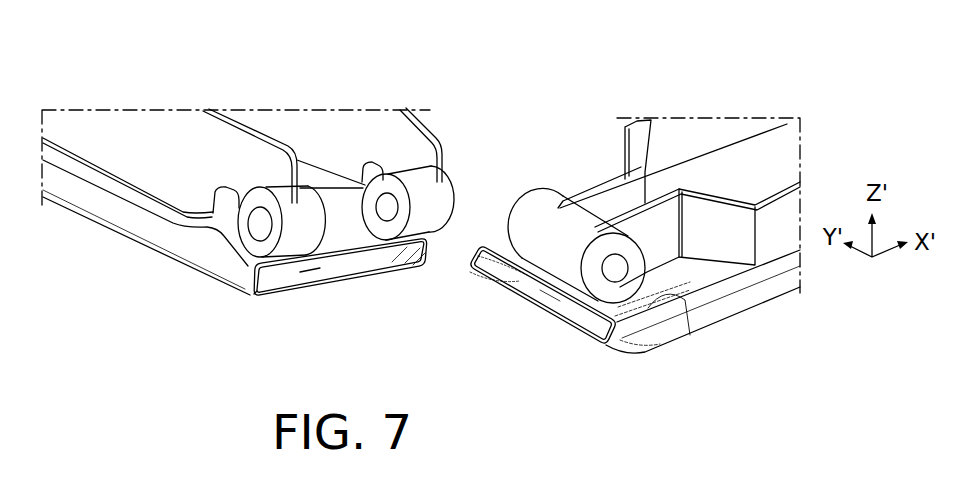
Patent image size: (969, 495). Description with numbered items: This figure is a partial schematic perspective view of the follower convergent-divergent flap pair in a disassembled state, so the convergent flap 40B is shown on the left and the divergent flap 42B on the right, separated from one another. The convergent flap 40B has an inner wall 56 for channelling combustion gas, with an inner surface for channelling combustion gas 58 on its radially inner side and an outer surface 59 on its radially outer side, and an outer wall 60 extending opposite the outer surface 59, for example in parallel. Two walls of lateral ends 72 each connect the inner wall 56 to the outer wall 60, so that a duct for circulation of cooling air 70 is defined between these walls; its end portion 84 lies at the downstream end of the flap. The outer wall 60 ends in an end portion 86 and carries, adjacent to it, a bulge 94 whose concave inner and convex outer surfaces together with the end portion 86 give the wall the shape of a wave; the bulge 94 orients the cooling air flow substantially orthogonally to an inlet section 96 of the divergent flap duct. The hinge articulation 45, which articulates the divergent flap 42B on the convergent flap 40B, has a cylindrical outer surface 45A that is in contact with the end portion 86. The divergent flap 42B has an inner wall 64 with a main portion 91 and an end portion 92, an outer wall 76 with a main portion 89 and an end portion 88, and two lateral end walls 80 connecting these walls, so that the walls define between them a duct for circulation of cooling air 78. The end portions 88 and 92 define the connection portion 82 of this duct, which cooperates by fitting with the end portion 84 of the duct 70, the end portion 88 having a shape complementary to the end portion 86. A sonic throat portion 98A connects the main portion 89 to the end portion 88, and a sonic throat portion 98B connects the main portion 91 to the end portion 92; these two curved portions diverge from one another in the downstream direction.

The convergent flap 40B is at (244, 110).
The divergent flap 42B is at (698, 135).
The hinge articulation 45 is at (447, 168).
The outer surface 45A is at (397, 173).
The inner wall 56 is at (322, 302).
The inner surface for channelling combustion gas 58 is at (273, 296).
The outer surface 59 is at (252, 292).
The outer wall 60 is at (346, 258).
The end portion 86 is at (362, 253).
The inner wall 64 is at (663, 323).
The main portion 91 is at (758, 308).
The duct for circulation of cooling air 70 is at (335, 324).
The end portion 84 is at (305, 273).
The walls of lateral ends 72 is at (77, 198).
The outer wall 76 is at (745, 188).
The main portion 89 is at (710, 270).
The duct for circulation of cooling air 78 is at (550, 335).
The connection portion 82 is at (598, 325).
The lateral end walls 80 is at (496, 258).
The end portion 88 is at (652, 300).
The end portion 92 is at (556, 322).
The bulge 94 is at (220, 190).
The inlet section 96 is at (527, 288).
The sonic throat portion 98A is at (688, 292).
The sonic throat portion 98B is at (655, 353).